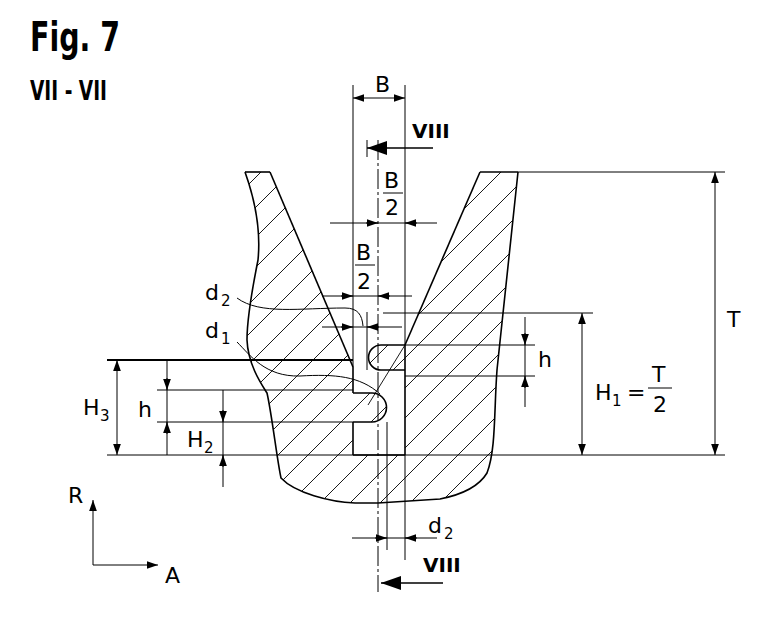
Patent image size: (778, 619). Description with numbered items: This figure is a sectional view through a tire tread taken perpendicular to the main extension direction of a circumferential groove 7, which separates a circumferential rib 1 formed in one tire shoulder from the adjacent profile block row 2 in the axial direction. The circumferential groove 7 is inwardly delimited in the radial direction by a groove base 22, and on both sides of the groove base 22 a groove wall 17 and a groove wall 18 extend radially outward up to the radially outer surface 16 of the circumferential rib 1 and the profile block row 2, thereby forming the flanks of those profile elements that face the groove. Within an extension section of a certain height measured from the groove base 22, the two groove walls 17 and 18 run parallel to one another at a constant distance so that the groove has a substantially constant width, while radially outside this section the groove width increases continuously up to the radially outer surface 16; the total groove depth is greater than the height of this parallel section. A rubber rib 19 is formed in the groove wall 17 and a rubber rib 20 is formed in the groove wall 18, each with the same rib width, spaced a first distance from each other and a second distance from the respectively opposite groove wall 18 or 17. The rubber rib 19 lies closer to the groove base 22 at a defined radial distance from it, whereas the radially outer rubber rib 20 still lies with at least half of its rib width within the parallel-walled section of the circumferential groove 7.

The circumferential rib 1 is at (248, 170).
The profile block row 2 is at (505, 172).
The circumferential groove 7 is at (333, 213).
The radially outer surface 16 is at (260, 170).
The groove wall 17 is at (284, 205).
The groove wall 18 is at (466, 205).
The rubber rib 19 is at (375, 408).
The rubber rib 20 is at (397, 363).
The groove base 22 is at (362, 444).